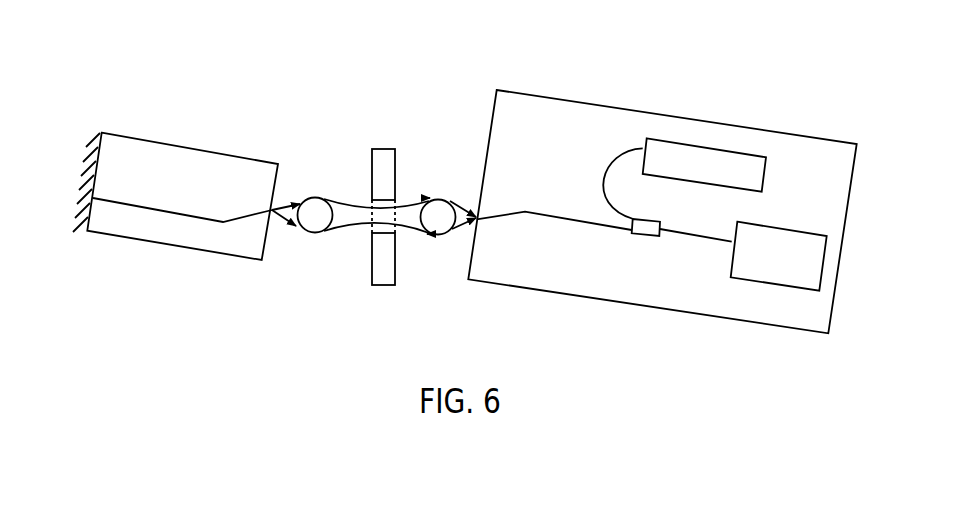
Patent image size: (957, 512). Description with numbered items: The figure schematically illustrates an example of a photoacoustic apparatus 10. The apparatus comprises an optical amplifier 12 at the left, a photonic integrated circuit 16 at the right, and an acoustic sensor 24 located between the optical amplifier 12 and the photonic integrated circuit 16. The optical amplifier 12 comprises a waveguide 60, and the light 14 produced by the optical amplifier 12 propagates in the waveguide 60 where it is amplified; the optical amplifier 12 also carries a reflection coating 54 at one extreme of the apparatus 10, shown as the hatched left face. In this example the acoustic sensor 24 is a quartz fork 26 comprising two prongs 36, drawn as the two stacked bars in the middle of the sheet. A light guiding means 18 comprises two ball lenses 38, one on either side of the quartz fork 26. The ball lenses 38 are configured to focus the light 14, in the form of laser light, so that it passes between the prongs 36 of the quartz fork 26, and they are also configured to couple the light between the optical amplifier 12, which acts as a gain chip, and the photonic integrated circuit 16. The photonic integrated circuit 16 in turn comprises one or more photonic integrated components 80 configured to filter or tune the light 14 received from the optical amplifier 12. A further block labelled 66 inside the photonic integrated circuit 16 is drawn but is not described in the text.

The photoacoustic apparatus 10 is at (790, 97).
The optical amplifier 12 is at (187, 145).
The light 14 is at (283, 203).
The photonic integrated circuit 16 is at (668, 115).
The light guiding means 18 is at (431, 100).
The acoustic sensor 24 is at (382, 285).
The quartz fork 26 is at (395, 214).
The prongs 36 is at (382, 150).
The ball lenses 38 is at (312, 225).
The reflection coating 54 is at (96, 131).
The waveguide 60 is at (162, 212).
The light source 66 is at (762, 183).
The photonic integrated components 80 is at (762, 283).